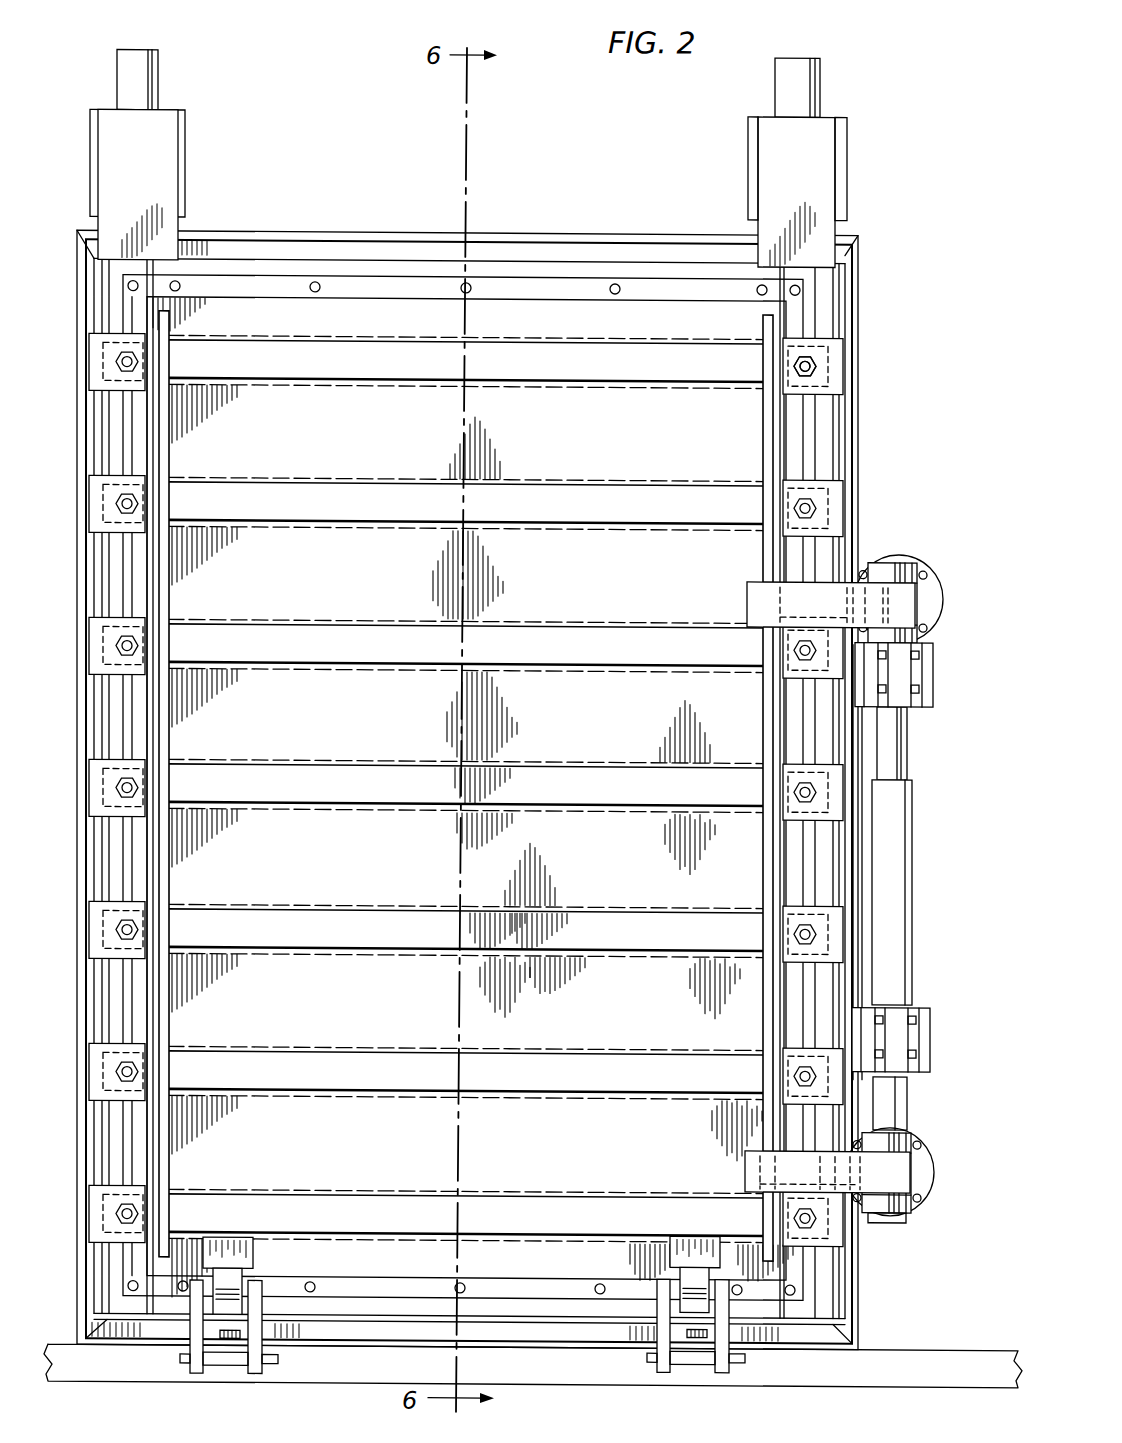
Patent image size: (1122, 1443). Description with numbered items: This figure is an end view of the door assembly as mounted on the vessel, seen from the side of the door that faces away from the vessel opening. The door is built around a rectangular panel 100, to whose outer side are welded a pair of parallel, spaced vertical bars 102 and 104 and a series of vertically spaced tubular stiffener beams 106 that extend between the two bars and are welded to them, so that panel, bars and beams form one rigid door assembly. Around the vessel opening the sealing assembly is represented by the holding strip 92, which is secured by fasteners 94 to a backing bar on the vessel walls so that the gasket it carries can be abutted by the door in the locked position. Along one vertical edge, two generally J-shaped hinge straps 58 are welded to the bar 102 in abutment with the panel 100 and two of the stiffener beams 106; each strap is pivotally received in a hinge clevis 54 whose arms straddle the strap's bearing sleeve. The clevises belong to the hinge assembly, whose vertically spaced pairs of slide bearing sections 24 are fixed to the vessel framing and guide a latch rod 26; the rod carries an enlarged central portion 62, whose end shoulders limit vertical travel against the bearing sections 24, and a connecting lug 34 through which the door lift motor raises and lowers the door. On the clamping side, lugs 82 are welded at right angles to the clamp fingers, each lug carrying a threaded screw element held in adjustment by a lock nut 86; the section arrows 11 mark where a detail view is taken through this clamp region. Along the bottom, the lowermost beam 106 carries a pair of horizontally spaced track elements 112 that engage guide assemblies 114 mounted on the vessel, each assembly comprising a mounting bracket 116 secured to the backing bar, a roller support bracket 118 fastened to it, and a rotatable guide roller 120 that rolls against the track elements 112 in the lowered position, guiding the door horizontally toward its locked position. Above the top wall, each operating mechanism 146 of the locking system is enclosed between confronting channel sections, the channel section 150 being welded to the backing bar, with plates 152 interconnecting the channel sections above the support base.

The damper frame channel 11 is at (824, 305).
The slide bearing section 24 is at (942, 669).
The latch rod 26 is at (900, 742).
The connecting lug 34 is at (875, 815).
The hinge clevis 54 is at (888, 1202).
The hinge strap 58 is at (805, 596).
The enlarged central portion 62 is at (905, 897).
The lug 82 is at (845, 505).
The lock nut 86 is at (800, 373).
The holding strip 92 is at (370, 297).
The fasteners 94 is at (614, 283).
The rectangular panel 100 is at (258, 306).
The vertical bar 102 is at (767, 442).
The vertical bar 104 is at (170, 437).
The tubular stiffener beam 106 is at (500, 495).
The track element 112 is at (228, 1247).
The guide assembly 114 is at (758, 1345).
The mounting bracket 116 is at (268, 1332).
The roller support bracket 118 is at (255, 1292).
The guide roller 120 is at (225, 1297).
The operating mechanism 146 is at (800, 152).
The channel section 150 is at (772, 162).
The plates 152 is at (845, 186).